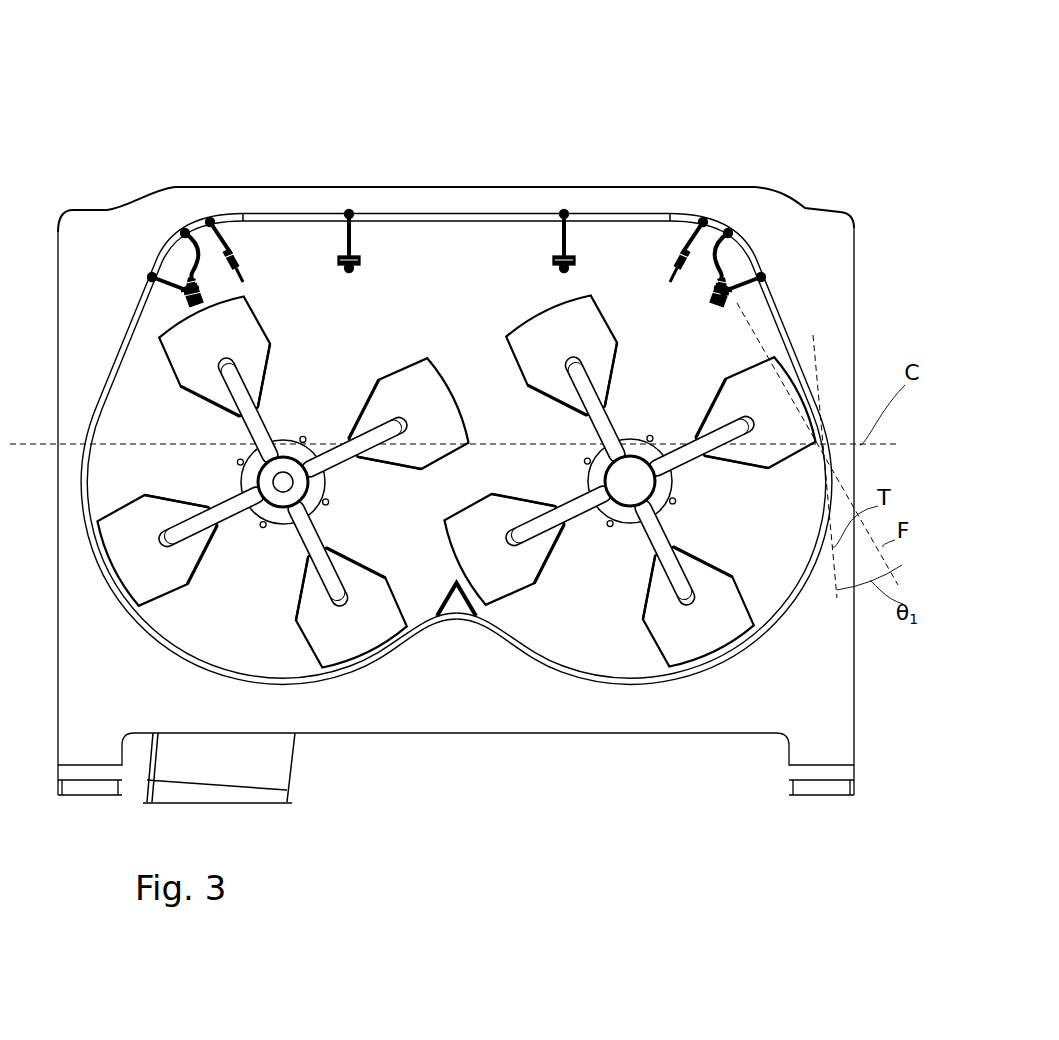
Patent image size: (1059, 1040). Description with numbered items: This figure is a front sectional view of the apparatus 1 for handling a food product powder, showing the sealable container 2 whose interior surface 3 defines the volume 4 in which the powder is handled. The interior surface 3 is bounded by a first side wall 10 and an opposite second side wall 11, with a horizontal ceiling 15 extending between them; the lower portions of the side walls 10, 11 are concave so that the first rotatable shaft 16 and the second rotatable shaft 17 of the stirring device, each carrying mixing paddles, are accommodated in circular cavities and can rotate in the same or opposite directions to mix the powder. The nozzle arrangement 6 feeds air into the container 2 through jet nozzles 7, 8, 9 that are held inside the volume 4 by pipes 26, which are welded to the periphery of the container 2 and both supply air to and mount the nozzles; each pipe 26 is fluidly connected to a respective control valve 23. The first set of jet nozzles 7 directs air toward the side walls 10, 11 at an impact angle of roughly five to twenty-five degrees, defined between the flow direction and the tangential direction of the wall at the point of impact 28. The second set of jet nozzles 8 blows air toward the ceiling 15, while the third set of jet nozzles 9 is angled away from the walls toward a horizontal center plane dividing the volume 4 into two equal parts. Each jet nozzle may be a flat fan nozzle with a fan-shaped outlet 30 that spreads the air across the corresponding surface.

The apparatus 1 is at (766, 42).
The sealable container 2 is at (673, 215).
The interior surface 3 is at (447, 214).
The volume 4 is at (645, 275).
The nozzle arrangement 6 is at (165, 206).
The first set of jet nozzles 7 is at (718, 267).
The second set of jet nozzles 8 is at (600, 213).
The third set of jet nozzles 9 is at (237, 252).
The first side wall 10 is at (100, 396).
The second side wall 11 is at (775, 303).
The ceiling 15 is at (480, 214).
The first rotatable shaft 16 is at (277, 518).
The second rotatable shaft 17 is at (627, 517).
The control valve 23 is at (574, 252).
The pipes 26 is at (357, 254).
The point of impact 28 is at (827, 430).
The fan-shaped outlet 30 is at (362, 215).